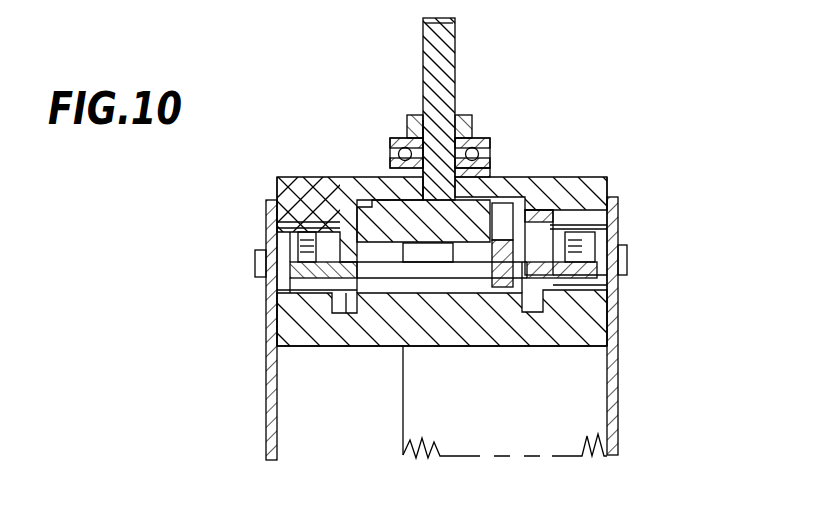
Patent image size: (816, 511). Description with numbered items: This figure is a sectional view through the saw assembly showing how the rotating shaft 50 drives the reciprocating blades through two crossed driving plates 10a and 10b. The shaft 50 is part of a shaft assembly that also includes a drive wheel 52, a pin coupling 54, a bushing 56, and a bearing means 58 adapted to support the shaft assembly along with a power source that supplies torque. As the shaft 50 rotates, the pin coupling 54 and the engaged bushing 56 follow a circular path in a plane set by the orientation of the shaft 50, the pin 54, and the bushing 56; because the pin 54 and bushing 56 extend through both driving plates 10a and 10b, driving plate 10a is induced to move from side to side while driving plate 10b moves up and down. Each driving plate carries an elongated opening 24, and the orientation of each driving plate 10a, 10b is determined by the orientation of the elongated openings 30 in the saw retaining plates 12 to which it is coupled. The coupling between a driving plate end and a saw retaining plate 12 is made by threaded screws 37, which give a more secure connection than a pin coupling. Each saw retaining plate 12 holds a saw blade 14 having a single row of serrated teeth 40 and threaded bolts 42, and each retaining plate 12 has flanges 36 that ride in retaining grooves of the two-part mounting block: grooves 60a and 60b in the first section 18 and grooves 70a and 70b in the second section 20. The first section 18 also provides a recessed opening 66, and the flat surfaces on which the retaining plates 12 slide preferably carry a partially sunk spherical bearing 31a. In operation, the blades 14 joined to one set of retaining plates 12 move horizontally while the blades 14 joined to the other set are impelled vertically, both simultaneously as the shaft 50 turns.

The driving plate 10a is at (490, 200).
The driving plate 10b is at (290, 330).
The saw retaining plate 12 is at (275, 315).
The saw blade 14 is at (270, 228).
The first section 18 is at (275, 185).
The second section 20 is at (322, 350).
The elongated opening 24 is at (430, 320).
The elongated opening 30 is at (298, 282).
The partially sunk spherical bearing 31a is at (292, 228).
The flange 36 is at (310, 180).
The threaded screw 37 is at (290, 240).
The serrated teeth 40 is at (580, 440).
The threaded bolt 42 is at (258, 265).
The shaft 50 is at (452, 30).
The drive wheel 52 is at (435, 105).
The pin coupling 54 is at (535, 300).
The bushing 56 is at (478, 300).
The bearing means 58 is at (466, 130).
The retaining groove 60a is at (555, 210).
The retaining groove 60b is at (350, 200).
The recessed opening 66 is at (372, 200).
The retaining groove 70a is at (585, 325).
The retaining groove 70b is at (380, 300).